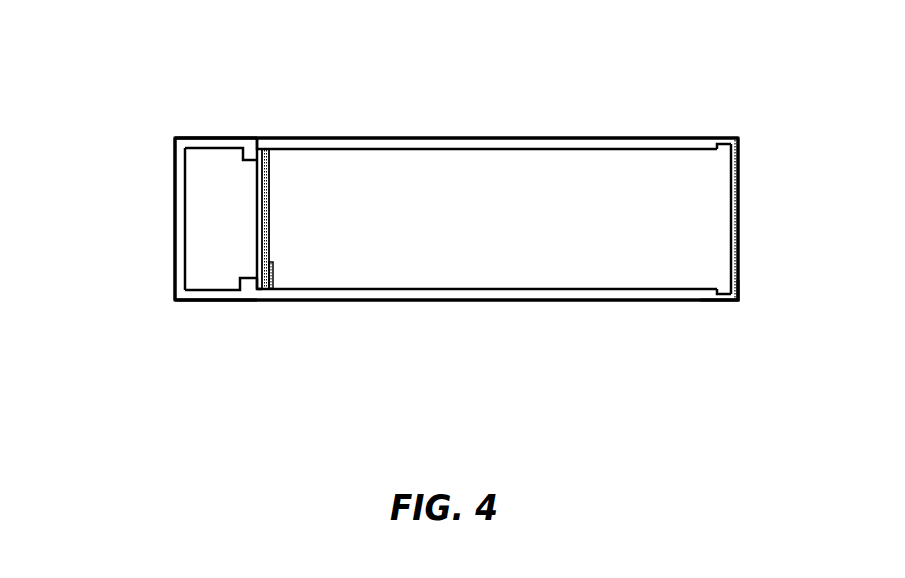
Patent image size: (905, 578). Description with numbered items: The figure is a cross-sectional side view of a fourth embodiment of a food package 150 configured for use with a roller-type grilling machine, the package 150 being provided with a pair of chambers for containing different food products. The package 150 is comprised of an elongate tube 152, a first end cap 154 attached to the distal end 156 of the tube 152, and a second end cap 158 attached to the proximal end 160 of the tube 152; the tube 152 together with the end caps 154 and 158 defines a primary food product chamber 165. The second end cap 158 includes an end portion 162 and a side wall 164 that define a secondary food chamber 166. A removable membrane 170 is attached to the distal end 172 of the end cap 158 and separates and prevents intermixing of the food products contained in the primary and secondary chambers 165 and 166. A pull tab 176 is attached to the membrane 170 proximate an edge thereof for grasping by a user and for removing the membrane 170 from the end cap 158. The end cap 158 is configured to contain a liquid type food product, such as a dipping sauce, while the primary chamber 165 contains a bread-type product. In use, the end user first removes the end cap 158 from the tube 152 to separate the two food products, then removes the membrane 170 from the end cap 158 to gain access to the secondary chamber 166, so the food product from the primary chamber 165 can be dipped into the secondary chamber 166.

The food package 150 is at (588, 104).
The elongate tube 152 is at (430, 301).
The first end cap 154 is at (739, 228).
The distal end 156 is at (718, 301).
The second end cap 158 is at (203, 302).
The proximal end 160 is at (270, 138).
The end portion 162 is at (175, 230).
The side wall 164 is at (203, 138).
The primary food product chamber 165 is at (418, 162).
The secondary food chamber 166 is at (208, 188).
The removable membrane 170 is at (270, 230).
The distal end 172 is at (254, 284).
The pull tab 176 is at (275, 272).